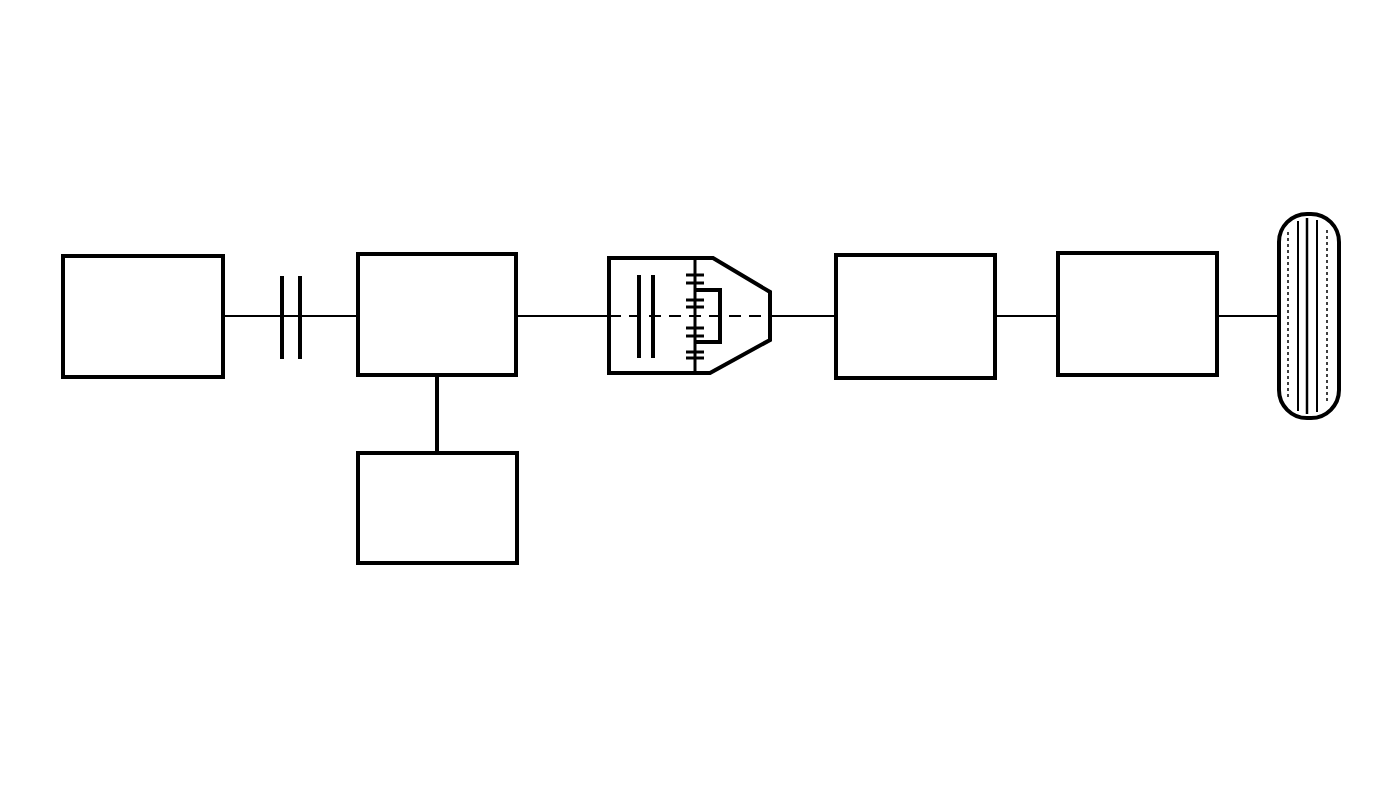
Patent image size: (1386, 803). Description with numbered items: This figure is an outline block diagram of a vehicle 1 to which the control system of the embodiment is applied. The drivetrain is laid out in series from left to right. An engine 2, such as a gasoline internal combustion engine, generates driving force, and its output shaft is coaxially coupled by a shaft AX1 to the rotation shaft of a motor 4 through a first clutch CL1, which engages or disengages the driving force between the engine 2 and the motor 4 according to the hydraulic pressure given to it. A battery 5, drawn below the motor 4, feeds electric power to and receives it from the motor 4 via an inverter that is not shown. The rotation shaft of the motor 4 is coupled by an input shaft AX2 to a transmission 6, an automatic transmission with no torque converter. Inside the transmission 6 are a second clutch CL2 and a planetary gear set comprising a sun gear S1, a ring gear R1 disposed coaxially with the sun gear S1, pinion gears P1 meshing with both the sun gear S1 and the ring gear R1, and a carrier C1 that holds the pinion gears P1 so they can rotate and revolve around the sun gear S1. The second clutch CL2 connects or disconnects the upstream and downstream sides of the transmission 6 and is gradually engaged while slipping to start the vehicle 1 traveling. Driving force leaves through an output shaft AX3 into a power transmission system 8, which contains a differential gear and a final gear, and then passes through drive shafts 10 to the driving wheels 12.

The vehicle 1 is at (792, 129).
The engine 2 is at (143, 256).
The motor 4 is at (436, 254).
The battery 5 is at (440, 565).
The transmission 6 is at (755, 321).
The power transmission system 8 is at (905, 255).
The drive shafts 10 is at (1141, 253).
The driving wheels 12 is at (1308, 214).
The shaft AX1 is at (328, 314).
The input shaft AX2 is at (562, 315).
The output shaft AX3 is at (807, 315).
The first clutch CL1 is at (279, 348).
The second clutch CL2 is at (635, 349).
The pinion gears P1 is at (688, 290).
The ring gear R1 is at (693, 259).
The carrier C1 is at (721, 304).
The sun gear S1 is at (691, 324).